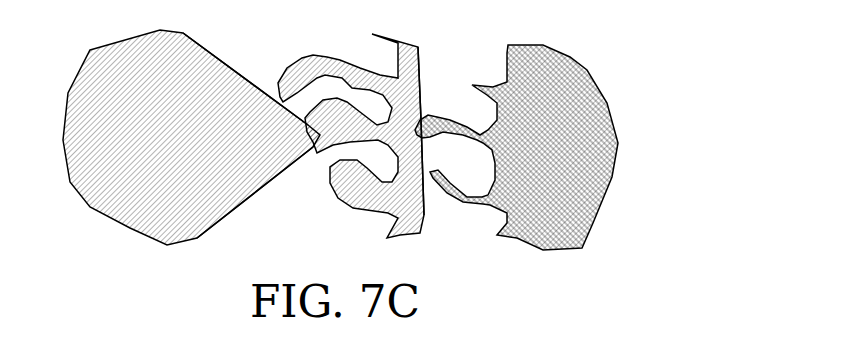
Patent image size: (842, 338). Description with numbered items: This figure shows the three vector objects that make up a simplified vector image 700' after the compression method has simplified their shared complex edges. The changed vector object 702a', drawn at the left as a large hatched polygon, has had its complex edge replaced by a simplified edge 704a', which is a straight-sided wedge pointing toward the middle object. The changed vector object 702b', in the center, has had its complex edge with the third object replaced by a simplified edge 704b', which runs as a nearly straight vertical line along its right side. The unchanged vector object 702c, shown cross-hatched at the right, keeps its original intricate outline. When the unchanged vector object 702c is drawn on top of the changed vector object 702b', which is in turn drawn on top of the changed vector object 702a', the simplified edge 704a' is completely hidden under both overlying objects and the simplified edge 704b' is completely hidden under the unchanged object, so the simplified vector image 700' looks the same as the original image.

The simplified vector image 700' is at (412, 139).
The changed vector object 702a' is at (188, 124).
The simplified edge 704a' is at (256, 128).
The changed vector object 702b' is at (382, 121).
The simplified edge 704b' is at (473, 161).
The unchanged vector object 702c is at (573, 57).